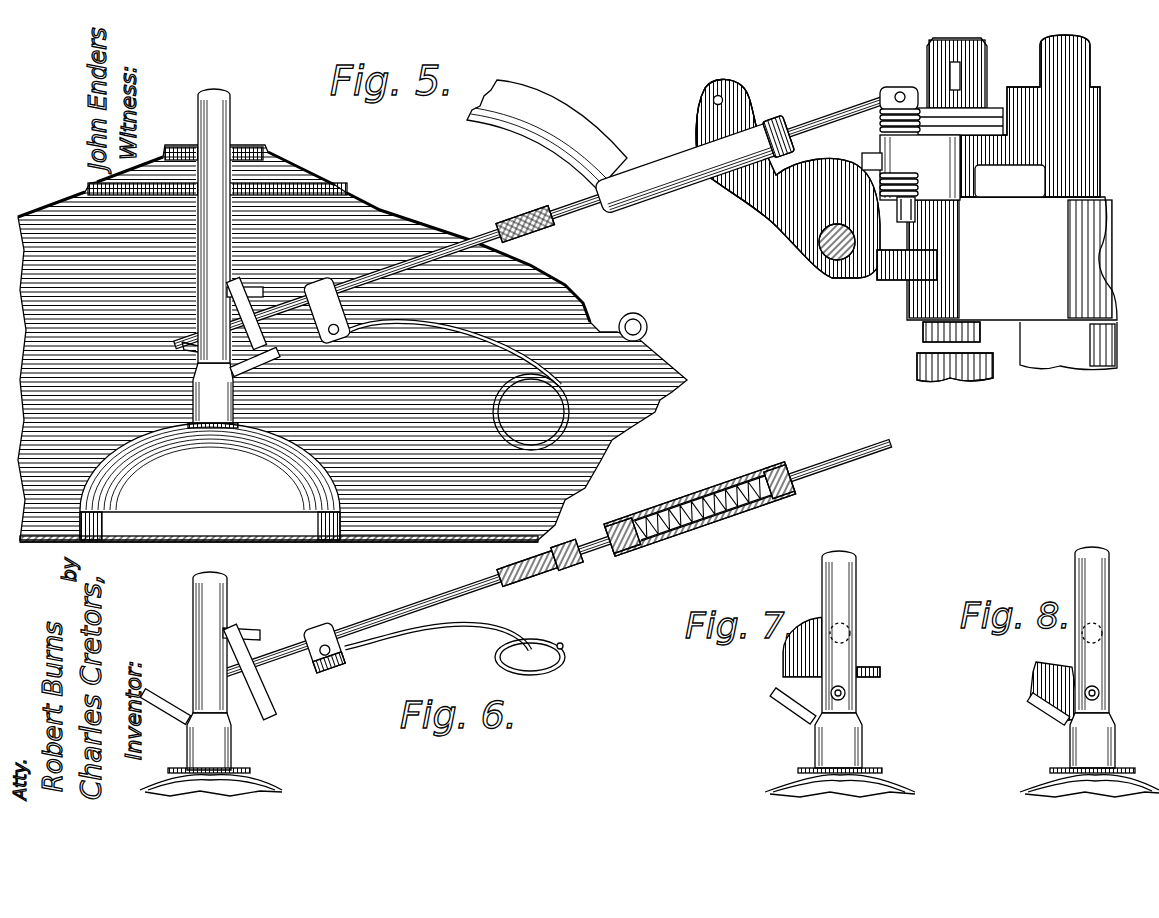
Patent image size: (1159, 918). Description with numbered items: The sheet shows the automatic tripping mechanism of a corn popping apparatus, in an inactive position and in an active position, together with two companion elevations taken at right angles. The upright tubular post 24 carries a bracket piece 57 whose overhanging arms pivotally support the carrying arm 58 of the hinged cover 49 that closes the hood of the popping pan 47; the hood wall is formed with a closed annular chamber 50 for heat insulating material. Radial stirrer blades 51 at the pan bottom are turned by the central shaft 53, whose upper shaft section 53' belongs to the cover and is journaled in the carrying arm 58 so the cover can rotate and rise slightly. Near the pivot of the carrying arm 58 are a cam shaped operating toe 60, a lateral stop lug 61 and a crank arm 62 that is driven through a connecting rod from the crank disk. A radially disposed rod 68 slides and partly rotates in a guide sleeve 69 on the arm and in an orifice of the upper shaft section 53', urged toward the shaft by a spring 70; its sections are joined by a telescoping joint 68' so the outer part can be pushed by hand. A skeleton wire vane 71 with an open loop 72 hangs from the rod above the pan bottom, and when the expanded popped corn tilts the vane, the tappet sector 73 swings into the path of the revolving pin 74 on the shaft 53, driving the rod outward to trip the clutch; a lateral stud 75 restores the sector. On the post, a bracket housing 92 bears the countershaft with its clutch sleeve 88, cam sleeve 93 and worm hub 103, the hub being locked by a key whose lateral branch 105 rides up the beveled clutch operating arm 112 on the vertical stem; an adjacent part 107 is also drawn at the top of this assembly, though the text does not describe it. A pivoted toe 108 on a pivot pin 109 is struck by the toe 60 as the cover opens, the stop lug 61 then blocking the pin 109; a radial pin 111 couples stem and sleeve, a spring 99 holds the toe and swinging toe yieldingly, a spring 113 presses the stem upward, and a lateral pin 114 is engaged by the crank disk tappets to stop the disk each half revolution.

In FIG. 5, the upright tubular post 24 is at (1068, 346).
In FIG. 5, the popping pan 47 is at (418, 540).
In FIG. 5, the hinged cover 49 is at (381, 208).
In FIG. 5, the closed annular chamber 50 is at (653, 367).
In FIG. 5, the stirrer blades 51 is at (370, 538).
In FIG. 5, the central shaft 53 is at (210, 451).
In FIG. 7, the central shaft 53 is at (840, 755).
In FIG. 8, the central shaft 53 is at (1089, 755).
In FIG. 5, the upper shaft section 53' is at (227, 226).
In FIG. 6, the upper shaft section 53' is at (211, 684).
In FIG. 7, the upper shaft section 53' is at (858, 632).
In FIG. 8, the upper shaft section 53' is at (1108, 630).
In FIG. 5, the bracket piece 57 is at (997, 258).
In FIG. 5, the carrying arm 58 is at (527, 98).
In FIG. 5, the cam shaped operating toe 60 is at (847, 190).
In FIG. 5, the lateral stop lug 61 is at (847, 277).
In FIG. 5, the crank arm 62 is at (730, 103).
In FIG. 5, the radially disposed rod 68 is at (539, 237).
In FIG. 6, the radially disposed rod 68 is at (558, 566).
In FIG. 7, the radially disposed rod 68 is at (861, 695).
In FIG. 8, the radially disposed rod 68 is at (1110, 690).
In FIG. 5, the telescoping joint 68' is at (525, 217).
In FIG. 6, the telescoping joint 68' is at (539, 572).
In FIG. 5, the guide sleeve 69 is at (700, 150).
In FIG. 6, the guide sleeve 69 is at (652, 508).
In FIG. 6, the spring 70 is at (703, 488).
In FIG. 5, the vane or blade 71 is at (450, 330).
In FIG. 6, the vane or blade 71 is at (440, 632).
In FIG. 5, the open loop 72 is at (560, 431).
In FIG. 6, the open loop 72 is at (530, 671).
In FIG. 5, the tappet arm or sector 73 is at (240, 313).
In FIG. 6, the tappet arm or sector 73 is at (266, 700).
In FIG. 7, the tappet arm or sector 73 is at (783, 659).
In FIG. 8, the tappet arm or sector 73 is at (1040, 672).
In FIG. 5, the revolving pin 74 is at (267, 367).
In FIG. 6, the revolving pin 74 is at (167, 720).
In FIG. 7, the revolving pin 74 is at (790, 713).
In FIG. 8, the revolving pin 74 is at (1033, 707).
In FIG. 5, the lateral stud 75 is at (253, 290).
In FIG. 6, the lateral stud 75 is at (253, 629).
In FIG. 7, the lateral stud 75 is at (851, 628).
In FIG. 8, the lateral stud 75 is at (1083, 633).
In FIG. 5, the clutch sleeve 88 is at (923, 368).
In FIG. 5, the bracket housing 92 is at (913, 148).
In FIG. 5, the cam sleeve 93 is at (923, 331).
In FIG. 5, the spring 99 is at (920, 177).
In FIG. 5, the worm hub 103 is at (1003, 128).
In FIG. 5, the lateral branch 105 is at (960, 70).
In FIG. 5, the cap 107 is at (980, 53).
In FIG. 5, the laterally projecting toe 108 is at (907, 207).
In FIG. 5, the pivot pin 109 is at (843, 207).
In FIG. 5, the radial pin 111 is at (933, 167).
In FIG. 5, the clutch operating arm 112 is at (900, 100).
In FIG. 5, the spring 113 is at (887, 130).
In FIG. 5, the lateral operating pin or stud 114 is at (897, 100).